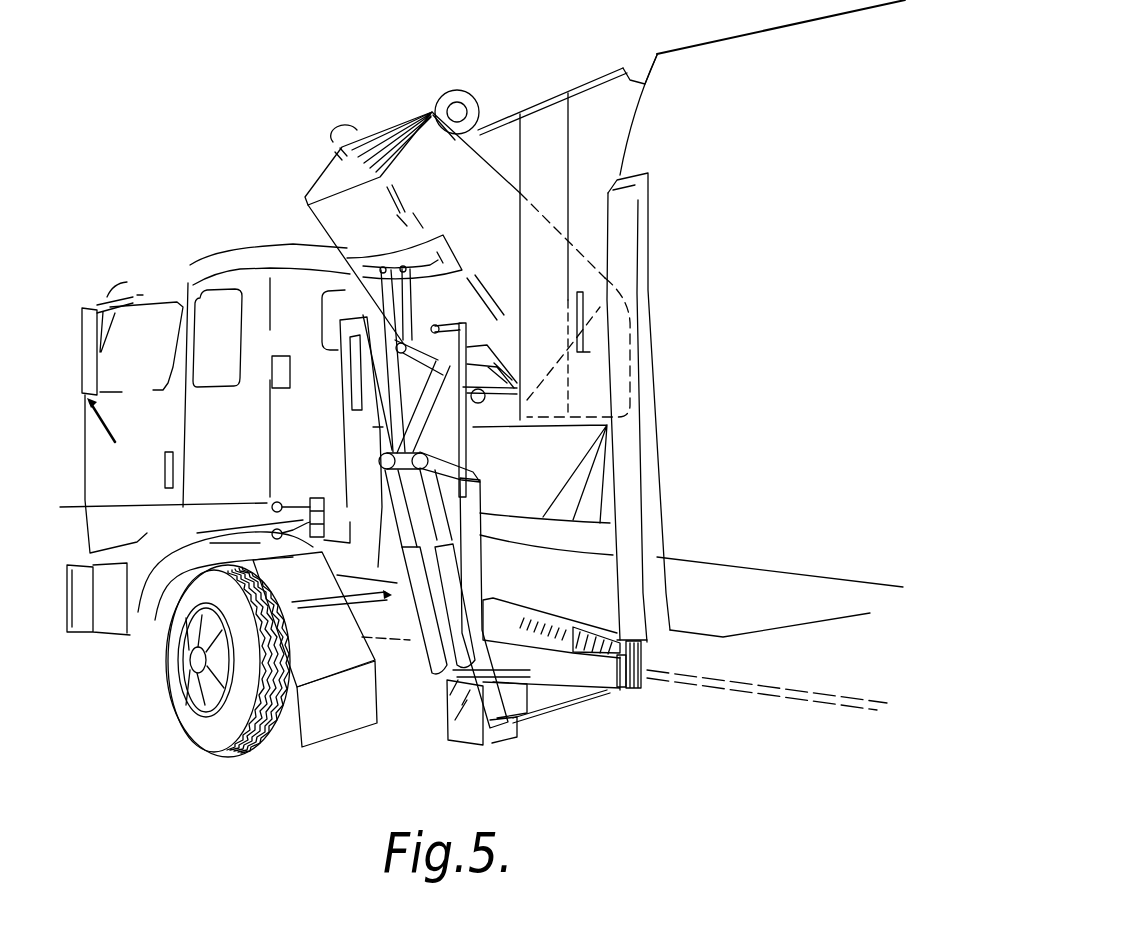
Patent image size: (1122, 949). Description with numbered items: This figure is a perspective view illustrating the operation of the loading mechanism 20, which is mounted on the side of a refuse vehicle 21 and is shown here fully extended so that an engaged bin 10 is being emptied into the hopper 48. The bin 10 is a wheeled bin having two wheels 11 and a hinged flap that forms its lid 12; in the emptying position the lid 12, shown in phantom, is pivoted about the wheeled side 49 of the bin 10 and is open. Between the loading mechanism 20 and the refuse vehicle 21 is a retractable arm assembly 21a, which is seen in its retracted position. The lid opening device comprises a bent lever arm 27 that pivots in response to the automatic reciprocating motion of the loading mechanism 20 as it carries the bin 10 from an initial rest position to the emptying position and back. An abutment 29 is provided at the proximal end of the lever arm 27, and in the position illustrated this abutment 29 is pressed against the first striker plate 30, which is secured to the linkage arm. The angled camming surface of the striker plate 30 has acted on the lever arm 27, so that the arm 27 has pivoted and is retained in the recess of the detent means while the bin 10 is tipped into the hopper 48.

The bin 10 is at (296, 176).
The wheels 11 is at (342, 128).
The lid 12 is at (630, 362).
The loading mechanism 20 is at (393, 633).
The refuse vehicle 21 is at (112, 490).
The retractable arm assembly 21a is at (603, 685).
The bent lever arm 27 is at (511, 380).
The abutment 29 is at (485, 398).
The first striker plate 30 is at (467, 400).
The hopper 48 is at (529, 500).
The wheeled side 49 is at (384, 143).